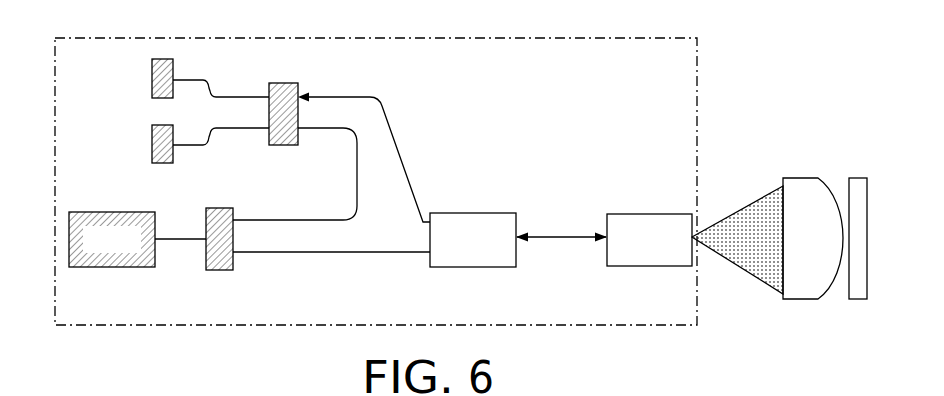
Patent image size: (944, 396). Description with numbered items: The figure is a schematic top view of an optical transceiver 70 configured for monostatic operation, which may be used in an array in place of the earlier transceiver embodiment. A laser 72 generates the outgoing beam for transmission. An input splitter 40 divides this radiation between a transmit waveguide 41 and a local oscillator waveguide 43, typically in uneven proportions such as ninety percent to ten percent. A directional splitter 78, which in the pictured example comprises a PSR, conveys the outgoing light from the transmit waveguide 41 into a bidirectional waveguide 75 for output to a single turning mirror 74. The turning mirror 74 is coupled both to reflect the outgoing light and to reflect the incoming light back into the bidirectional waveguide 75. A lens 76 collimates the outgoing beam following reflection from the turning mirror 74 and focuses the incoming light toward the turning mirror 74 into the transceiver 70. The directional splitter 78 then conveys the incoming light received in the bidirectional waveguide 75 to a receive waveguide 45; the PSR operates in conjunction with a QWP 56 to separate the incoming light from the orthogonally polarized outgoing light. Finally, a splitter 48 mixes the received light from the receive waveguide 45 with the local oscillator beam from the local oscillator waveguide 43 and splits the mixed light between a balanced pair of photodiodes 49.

The optical transceiver 70 is at (82, 37).
The laser 72 is at (110, 212).
The input splitter 40 is at (206, 220).
The local oscillator waveguide 43 is at (356, 196).
The transmit waveguide 41 is at (395, 253).
The splitter 48 is at (280, 146).
The photodiodes 49 is at (152, 142).
The receive waveguide 45 is at (403, 167).
The directional splitter 78 is at (488, 213).
The bidirectional waveguide 75 is at (565, 239).
The turning mirror 74 is at (647, 214).
The lens 76 is at (800, 178).
The QWP 56 is at (858, 178).